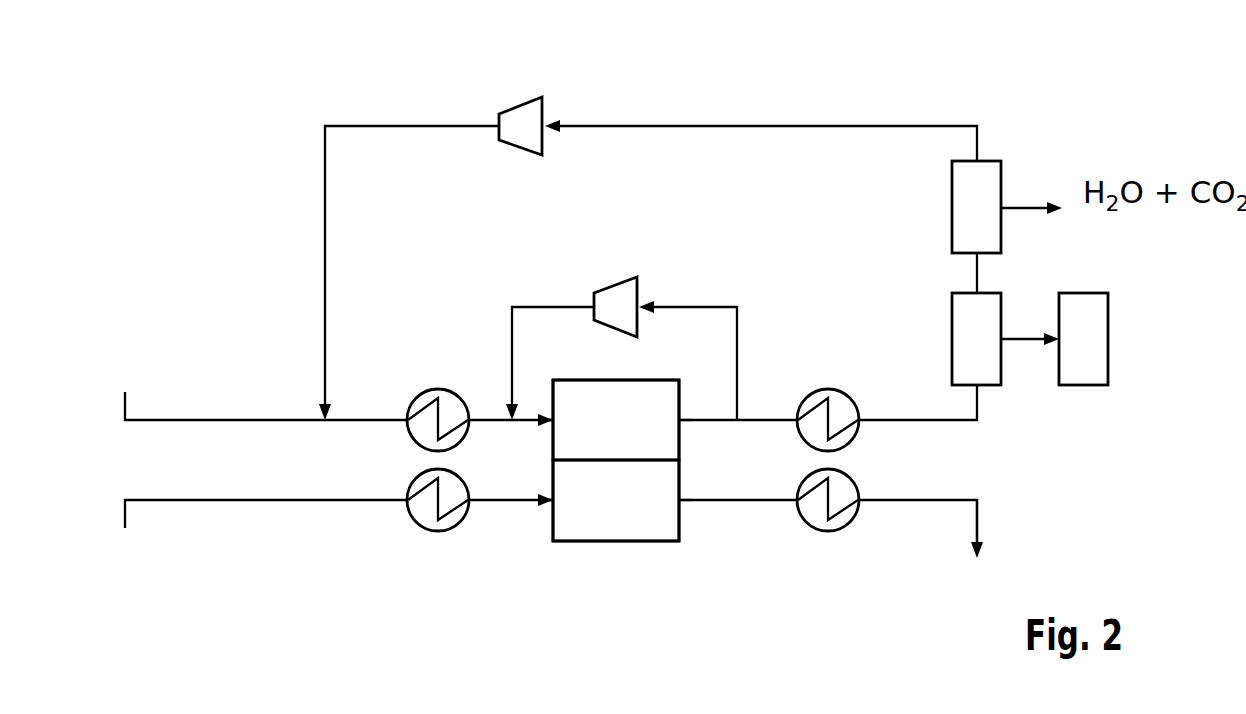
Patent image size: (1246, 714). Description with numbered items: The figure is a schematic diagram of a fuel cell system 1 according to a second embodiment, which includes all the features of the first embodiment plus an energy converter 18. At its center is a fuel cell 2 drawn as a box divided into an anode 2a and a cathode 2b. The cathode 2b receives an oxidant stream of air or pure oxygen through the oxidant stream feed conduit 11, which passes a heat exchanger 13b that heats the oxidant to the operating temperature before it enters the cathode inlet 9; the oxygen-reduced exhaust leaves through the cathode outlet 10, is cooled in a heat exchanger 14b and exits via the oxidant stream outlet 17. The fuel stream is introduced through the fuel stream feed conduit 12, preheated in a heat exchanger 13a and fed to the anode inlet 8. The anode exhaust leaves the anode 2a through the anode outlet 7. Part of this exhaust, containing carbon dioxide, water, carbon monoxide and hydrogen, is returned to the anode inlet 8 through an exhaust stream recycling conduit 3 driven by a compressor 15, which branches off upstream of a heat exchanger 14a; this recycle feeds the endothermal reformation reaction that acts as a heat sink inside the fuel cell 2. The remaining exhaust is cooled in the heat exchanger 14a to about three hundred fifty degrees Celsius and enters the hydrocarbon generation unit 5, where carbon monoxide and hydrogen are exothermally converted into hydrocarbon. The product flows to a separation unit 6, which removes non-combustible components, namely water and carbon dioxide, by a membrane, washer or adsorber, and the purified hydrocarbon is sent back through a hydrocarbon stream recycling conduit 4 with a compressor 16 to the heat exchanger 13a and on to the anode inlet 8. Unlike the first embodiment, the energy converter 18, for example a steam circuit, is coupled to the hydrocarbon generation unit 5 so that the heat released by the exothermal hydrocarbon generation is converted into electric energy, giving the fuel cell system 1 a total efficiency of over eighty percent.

The fuel cell system 1 is at (1034, 166).
The fuel cell 2 is at (594, 568).
The anode 2a is at (588, 392).
The cathode 2b is at (640, 530).
The exhaust stream recycling conduit 3 is at (687, 306).
The hydrocarbon stream recycling conduit 4 is at (753, 125).
The hydrocarbon generation unit 5 is at (1002, 368).
The separation unit 6 is at (1002, 232).
The anode outlet 7 is at (679, 407).
The anode inlet 8 is at (553, 407).
The cathode inlet 9 is at (553, 505).
The cathode outlet 10 is at (679, 505).
The oxidant stream feed conduit 11 is at (125, 517).
The fuel stream feed conduit 12 is at (125, 406).
The heat exchanger 13a is at (439, 389).
The heat exchanger 13b is at (438, 532).
The heat exchanger 14a is at (829, 389).
The heat exchanger 14b is at (828, 532).
The compressor 15 is at (613, 288).
The compressor 16 is at (519, 106).
The oxidant stream outlet 17 is at (978, 519).
The energy converter 18 is at (1109, 333).